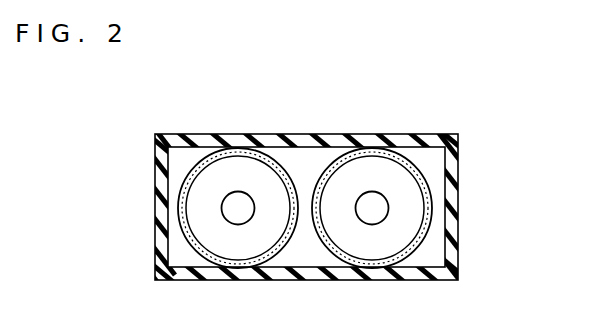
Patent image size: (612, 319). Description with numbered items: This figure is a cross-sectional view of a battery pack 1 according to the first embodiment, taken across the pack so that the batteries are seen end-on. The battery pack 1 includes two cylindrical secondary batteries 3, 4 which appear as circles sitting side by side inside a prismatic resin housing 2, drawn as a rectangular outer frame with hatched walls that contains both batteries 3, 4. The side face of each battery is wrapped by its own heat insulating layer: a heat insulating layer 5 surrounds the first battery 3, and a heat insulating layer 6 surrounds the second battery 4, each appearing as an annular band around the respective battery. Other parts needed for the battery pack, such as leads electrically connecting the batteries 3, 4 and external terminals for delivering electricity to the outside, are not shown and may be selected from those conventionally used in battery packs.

The battery pack 1 is at (223, 126).
The prismatic resin housing 2 is at (366, 137).
The battery 3 is at (205, 195).
The battery 4 is at (405, 193).
The heat insulating layer 5 is at (183, 233).
The heat insulating layer 6 is at (427, 237).